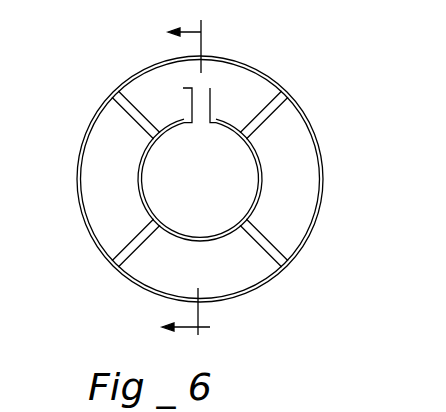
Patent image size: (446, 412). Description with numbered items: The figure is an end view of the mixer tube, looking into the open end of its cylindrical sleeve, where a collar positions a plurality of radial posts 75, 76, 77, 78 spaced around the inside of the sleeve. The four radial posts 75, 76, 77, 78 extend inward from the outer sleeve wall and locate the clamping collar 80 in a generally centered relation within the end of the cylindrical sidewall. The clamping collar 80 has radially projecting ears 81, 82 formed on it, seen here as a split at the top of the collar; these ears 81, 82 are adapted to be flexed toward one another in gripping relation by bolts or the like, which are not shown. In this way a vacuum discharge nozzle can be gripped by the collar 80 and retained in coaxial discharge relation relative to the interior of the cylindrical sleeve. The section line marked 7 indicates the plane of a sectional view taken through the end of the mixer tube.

The section line 7- 7 is at (176, 179).
The radial post 75 is at (278, 114).
The radial post 76 is at (283, 247).
The radial post 77 is at (123, 243).
The radial post 78 is at (120, 110).
The clamping collar 80 is at (260, 173).
The radially projecting ear 81 is at (191, 100).
The radially projecting ear 82 is at (211, 101).